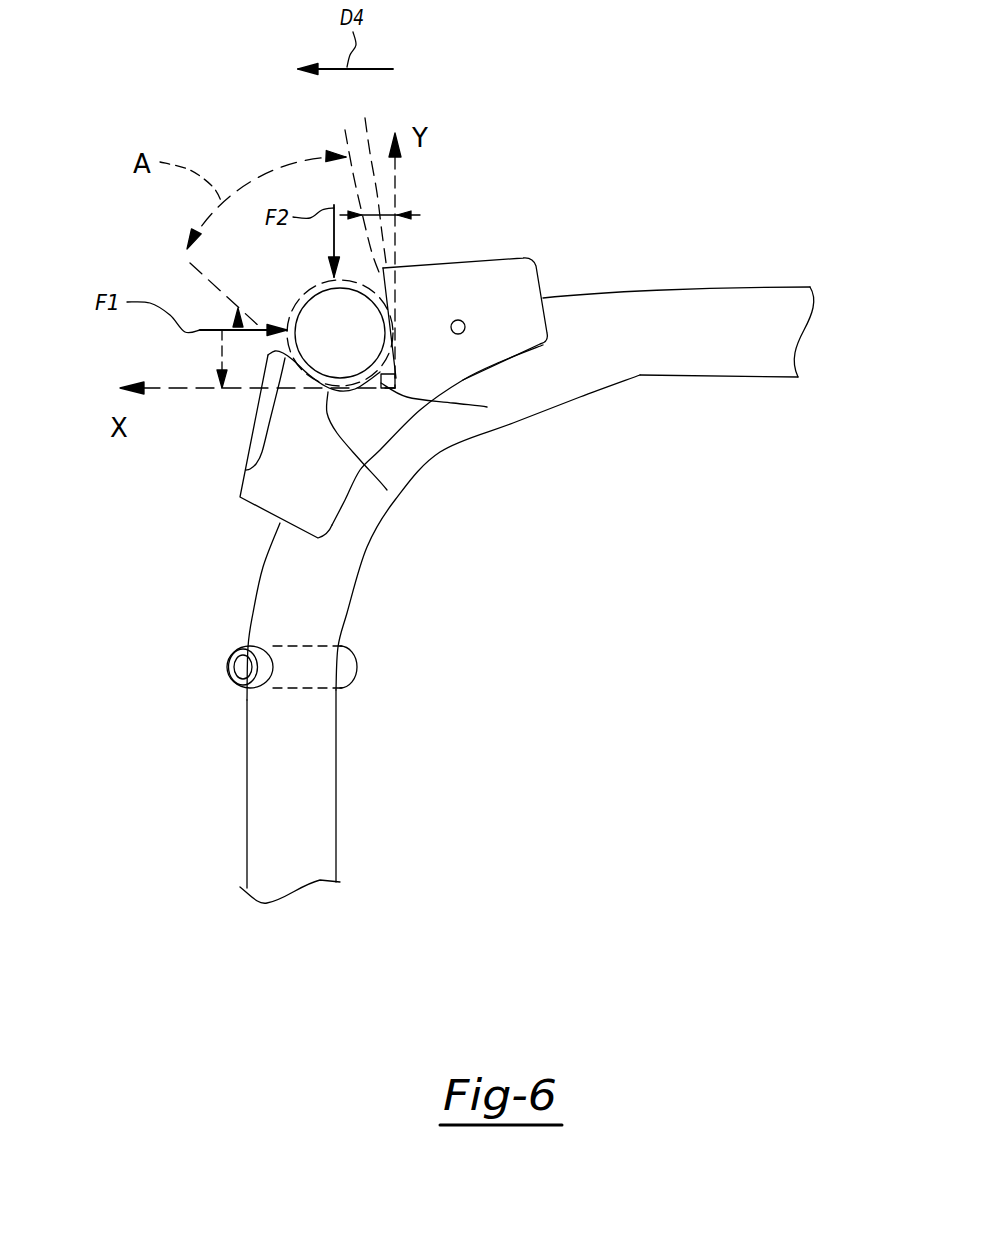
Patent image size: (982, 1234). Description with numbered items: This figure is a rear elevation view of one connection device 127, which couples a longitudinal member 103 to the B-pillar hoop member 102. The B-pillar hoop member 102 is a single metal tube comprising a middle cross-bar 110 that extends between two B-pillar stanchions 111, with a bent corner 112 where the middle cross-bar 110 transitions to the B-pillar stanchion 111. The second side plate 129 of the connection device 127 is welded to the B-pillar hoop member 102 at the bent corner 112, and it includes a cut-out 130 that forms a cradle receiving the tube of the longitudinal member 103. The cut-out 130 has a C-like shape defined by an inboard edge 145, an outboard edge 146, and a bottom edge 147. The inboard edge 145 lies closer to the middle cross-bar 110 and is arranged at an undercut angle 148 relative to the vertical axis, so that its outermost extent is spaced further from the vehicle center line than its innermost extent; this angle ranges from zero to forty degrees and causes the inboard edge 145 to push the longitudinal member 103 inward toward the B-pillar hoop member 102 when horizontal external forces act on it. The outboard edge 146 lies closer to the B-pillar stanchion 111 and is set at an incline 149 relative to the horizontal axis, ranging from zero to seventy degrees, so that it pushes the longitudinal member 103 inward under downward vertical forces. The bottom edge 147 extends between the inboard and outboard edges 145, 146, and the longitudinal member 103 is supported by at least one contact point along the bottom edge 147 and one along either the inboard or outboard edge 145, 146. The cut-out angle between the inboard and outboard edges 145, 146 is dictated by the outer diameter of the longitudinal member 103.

The B-pillar hoop member 102 is at (338, 795).
The longitudinal member 103 is at (312, 283).
The middle cross-bar 110 is at (767, 290).
The B-pillar stanchion 111 is at (267, 838).
The bent corner 112 is at (415, 453).
The connection device 127 is at (522, 208).
The second side plate 129 is at (290, 492).
The cut-out 130 is at (387, 490).
The inboard edge 145 is at (395, 317).
The outboard edge 146 is at (253, 467).
The bottom edge 147 is at (487, 407).
The undercut angle 148 is at (366, 178).
The incline 149 is at (222, 353).